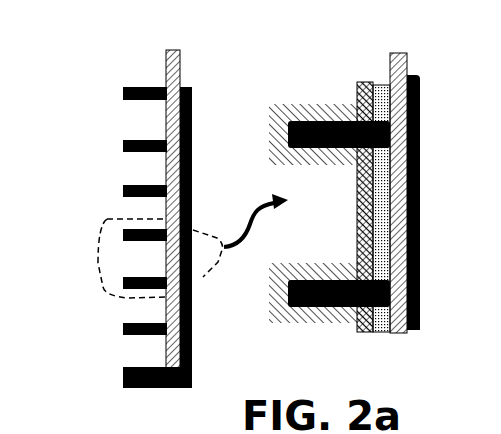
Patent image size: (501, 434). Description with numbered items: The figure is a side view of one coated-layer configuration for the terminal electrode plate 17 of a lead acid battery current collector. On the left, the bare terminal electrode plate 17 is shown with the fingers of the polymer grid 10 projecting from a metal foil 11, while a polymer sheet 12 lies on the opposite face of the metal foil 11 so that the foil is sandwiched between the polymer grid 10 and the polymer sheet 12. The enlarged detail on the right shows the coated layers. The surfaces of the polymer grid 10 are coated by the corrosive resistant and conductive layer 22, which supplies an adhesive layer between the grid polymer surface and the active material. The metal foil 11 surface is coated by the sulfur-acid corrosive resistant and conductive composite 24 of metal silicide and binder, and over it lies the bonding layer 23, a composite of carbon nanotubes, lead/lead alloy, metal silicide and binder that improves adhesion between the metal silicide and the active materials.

The terminal electrode plate 17 is at (90, 83).
The polymer grid 10 is at (123, 146).
The metal foil 11 is at (166, 64).
The polymer sheet 12 is at (186, 86).
The corrosive resistant and conductive layer 22 is at (297, 105).
The bonding layer 23 is at (365, 82).
The sulfur-acid corrosive resistant and conductive composite 24 is at (381, 85).